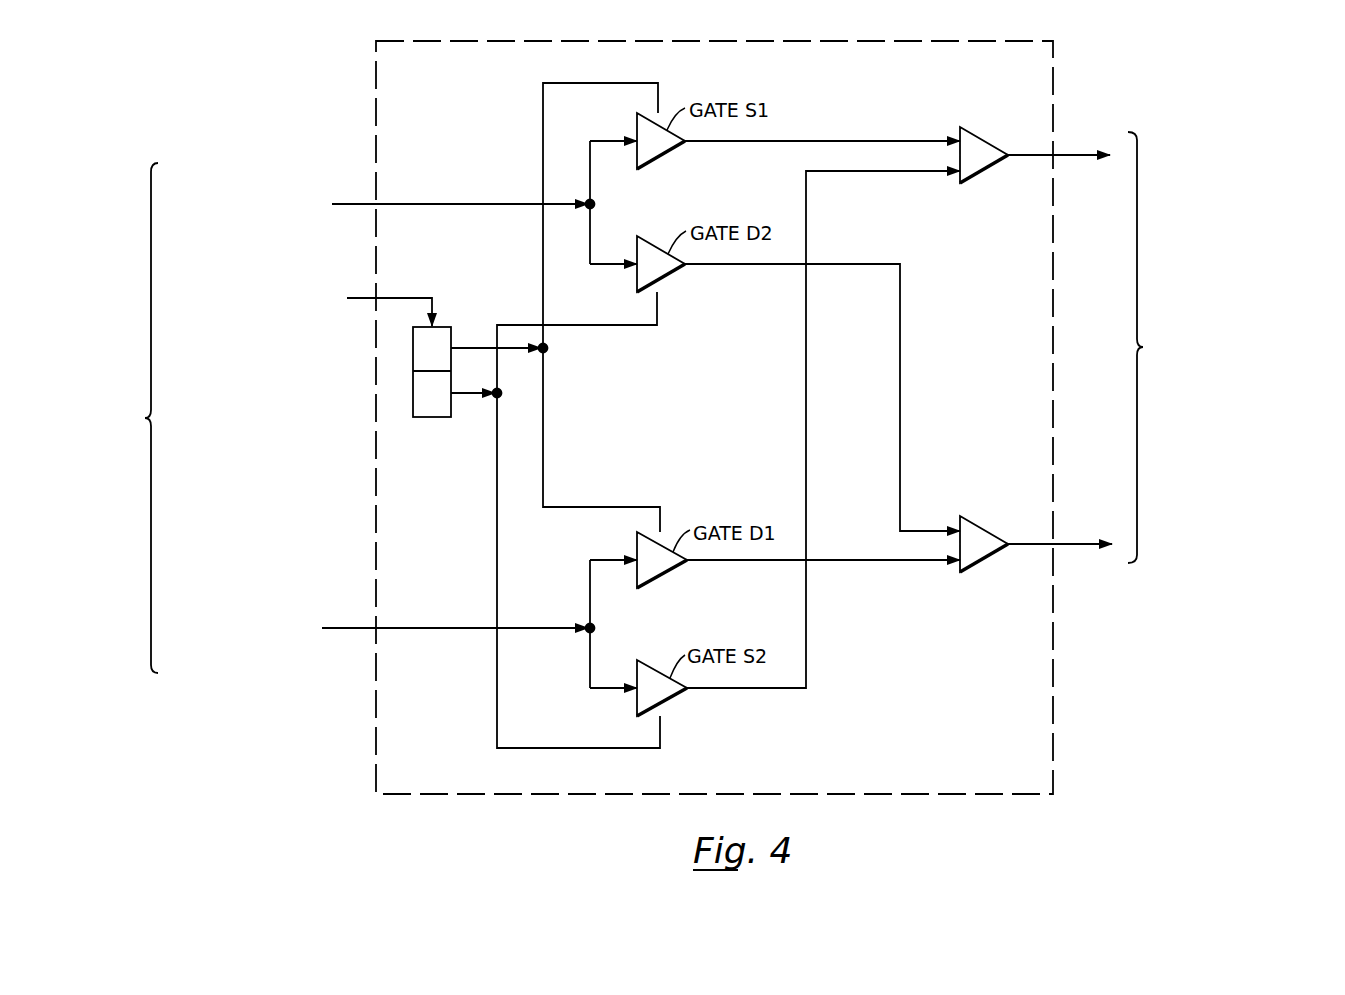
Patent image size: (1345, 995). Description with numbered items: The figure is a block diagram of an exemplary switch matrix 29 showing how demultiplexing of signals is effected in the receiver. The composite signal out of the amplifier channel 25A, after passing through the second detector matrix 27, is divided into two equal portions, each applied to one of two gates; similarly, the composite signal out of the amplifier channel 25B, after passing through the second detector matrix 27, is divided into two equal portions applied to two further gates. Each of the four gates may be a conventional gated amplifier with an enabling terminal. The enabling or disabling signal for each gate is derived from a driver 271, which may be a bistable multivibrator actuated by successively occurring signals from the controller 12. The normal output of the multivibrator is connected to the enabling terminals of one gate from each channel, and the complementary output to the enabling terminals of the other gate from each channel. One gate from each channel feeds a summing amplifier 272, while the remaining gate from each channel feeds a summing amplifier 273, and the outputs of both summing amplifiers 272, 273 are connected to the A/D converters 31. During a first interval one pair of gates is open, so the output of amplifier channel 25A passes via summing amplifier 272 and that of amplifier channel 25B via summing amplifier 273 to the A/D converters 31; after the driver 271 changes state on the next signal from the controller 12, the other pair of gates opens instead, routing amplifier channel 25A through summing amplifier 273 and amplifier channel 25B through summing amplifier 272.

The switch matrix 29 is at (627, 38).
The amplifier channel 25A is at (376, 208).
The amplifier channel 25B is at (375, 629).
The controller 12 is at (298, 300).
The driver 271 is at (430, 417).
The second detector matrix 27 is at (97, 418).
The A/D converters 31 is at (1219, 347).
The summing amplifier 272 is at (975, 178).
The summing amplifier 273 is at (975, 566).